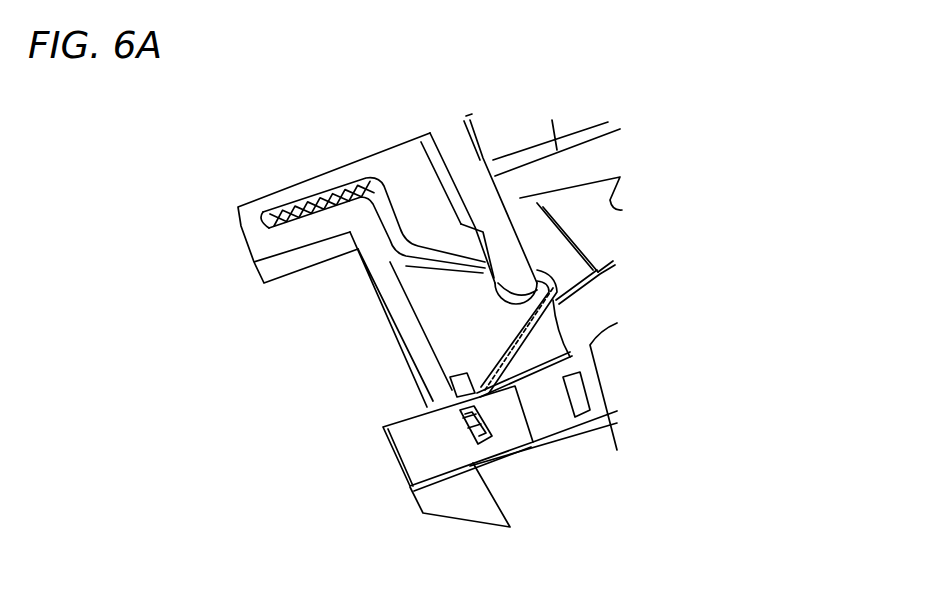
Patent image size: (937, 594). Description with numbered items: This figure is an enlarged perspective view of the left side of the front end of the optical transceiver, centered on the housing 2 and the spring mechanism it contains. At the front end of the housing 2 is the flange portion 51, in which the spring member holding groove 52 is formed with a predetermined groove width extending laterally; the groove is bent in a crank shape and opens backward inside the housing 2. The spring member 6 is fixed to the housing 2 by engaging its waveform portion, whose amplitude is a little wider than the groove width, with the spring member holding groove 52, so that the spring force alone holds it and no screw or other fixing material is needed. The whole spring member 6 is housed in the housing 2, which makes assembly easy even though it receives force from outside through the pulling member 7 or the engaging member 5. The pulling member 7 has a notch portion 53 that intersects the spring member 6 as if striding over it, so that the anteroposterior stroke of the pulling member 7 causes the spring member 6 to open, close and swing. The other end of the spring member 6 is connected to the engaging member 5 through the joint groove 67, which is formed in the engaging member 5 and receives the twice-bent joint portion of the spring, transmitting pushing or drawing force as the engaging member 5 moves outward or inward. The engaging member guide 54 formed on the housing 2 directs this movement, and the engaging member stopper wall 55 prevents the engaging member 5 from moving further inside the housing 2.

The housing 2 is at (328, 356).
The engaging member 5 is at (410, 432).
The spring member 6 is at (257, 260).
The pulling member 7 is at (507, 202).
The flange portion 51 is at (248, 204).
The spring member holding groove 52 is at (318, 195).
The notch portion 53 is at (460, 236).
The engaging member guide 54 is at (585, 348).
The engaging member stopper wall 55 is at (580, 397).
The joint groove 67 is at (517, 440).